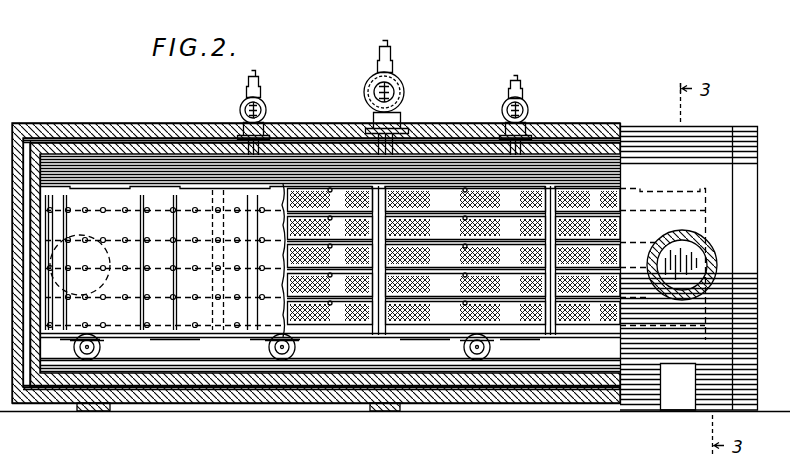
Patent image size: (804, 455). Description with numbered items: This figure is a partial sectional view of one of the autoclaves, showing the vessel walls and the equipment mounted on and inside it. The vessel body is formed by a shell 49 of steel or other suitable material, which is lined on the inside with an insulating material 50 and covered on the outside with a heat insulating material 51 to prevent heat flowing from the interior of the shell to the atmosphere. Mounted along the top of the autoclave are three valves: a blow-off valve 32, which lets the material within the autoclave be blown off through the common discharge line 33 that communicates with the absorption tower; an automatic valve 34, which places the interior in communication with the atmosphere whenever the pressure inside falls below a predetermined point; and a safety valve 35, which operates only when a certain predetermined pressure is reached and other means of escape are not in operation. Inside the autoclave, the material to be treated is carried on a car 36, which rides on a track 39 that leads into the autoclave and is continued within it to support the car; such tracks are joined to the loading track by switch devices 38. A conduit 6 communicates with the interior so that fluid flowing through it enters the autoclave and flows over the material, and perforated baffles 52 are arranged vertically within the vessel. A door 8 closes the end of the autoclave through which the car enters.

The conduit 6 is at (700, 250).
The door 8 is at (92, 232).
The blow-off valve 32 is at (372, 92).
The common discharge line 33 is at (403, 98).
The automatic valve 34 is at (240, 107).
The safety valve 35 is at (530, 101).
The car 36 is at (365, 340).
The switch device 38 is at (330, 409).
The track 39 is at (325, 362).
The shell 49 is at (102, 137).
The insulating material 50 is at (455, 150).
The heat insulating material 51 is at (318, 135).
The perforated baffle 52 is at (140, 190).